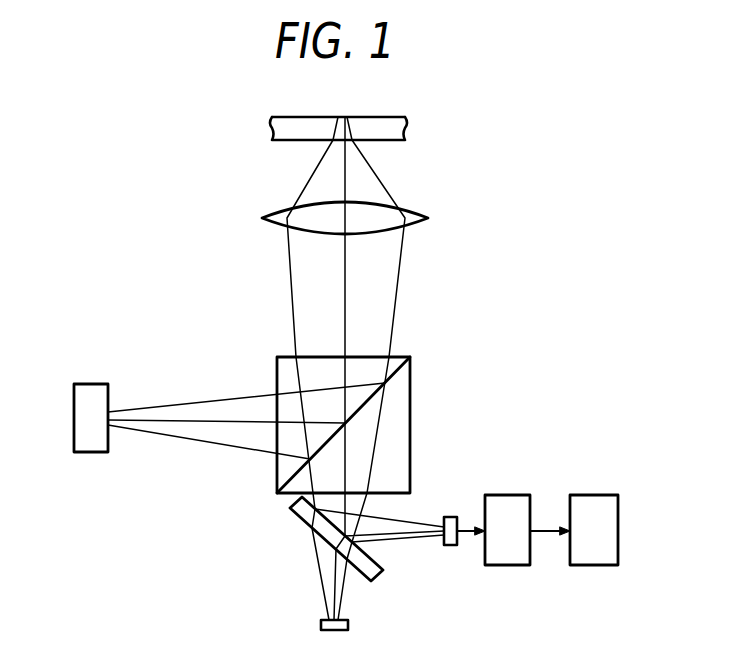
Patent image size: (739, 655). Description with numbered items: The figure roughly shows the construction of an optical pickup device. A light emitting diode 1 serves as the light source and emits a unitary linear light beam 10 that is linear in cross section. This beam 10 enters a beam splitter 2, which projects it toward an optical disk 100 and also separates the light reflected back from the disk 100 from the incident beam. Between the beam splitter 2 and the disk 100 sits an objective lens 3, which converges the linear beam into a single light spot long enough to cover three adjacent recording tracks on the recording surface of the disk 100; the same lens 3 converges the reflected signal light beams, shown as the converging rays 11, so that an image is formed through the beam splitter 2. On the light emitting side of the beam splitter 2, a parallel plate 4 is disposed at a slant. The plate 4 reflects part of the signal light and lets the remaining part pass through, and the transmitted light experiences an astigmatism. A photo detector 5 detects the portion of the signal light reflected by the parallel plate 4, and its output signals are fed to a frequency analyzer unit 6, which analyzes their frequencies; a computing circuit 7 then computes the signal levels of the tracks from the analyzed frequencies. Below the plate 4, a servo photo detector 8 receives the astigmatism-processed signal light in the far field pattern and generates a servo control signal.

The light emitting diode 1 is at (95, 453).
The unitary linear light beam 10 is at (188, 438).
The beam splitter 2 is at (410, 400).
The objective lens 3 is at (428, 218).
The converging light beam 11 is at (378, 177).
The optical disk 100 is at (374, 117).
The parallel plate 4 is at (383, 571).
The photo detector 5 is at (453, 516).
The frequency analyzer unit 6 is at (512, 495).
The computing circuit 7 is at (587, 495).
The servo photo detector 8 is at (320, 624).